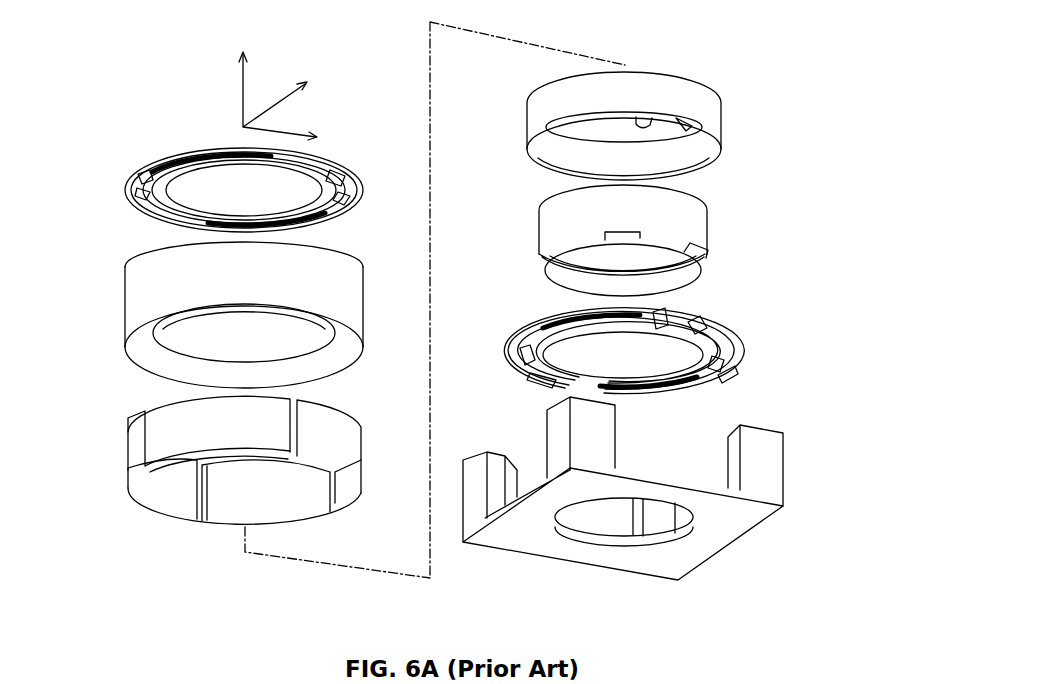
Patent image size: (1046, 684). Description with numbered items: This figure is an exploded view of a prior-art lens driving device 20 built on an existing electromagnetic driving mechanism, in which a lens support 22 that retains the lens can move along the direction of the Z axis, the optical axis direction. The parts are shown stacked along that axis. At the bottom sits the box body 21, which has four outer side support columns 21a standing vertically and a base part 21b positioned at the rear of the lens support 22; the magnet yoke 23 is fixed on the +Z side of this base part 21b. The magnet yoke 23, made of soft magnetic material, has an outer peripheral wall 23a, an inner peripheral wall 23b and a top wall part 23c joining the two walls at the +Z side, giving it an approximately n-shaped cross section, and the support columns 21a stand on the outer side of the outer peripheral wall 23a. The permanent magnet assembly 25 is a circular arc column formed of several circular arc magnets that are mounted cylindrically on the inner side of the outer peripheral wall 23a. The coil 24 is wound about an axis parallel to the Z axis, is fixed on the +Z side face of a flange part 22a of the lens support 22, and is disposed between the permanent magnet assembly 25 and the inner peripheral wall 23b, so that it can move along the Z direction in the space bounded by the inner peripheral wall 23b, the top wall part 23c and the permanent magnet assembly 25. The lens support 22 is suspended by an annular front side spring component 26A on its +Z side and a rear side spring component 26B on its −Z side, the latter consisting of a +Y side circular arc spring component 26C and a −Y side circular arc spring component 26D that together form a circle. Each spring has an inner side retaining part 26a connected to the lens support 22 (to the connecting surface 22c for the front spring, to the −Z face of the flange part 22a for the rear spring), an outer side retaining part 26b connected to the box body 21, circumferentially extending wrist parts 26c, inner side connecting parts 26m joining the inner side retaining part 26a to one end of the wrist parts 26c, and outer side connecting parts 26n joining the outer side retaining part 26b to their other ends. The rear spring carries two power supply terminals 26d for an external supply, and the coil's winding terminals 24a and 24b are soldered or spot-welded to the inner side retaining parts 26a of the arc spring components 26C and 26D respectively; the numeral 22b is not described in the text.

The lens driving device 20 is at (118, 61).
The box body 21 is at (653, 495).
The outer side support columns 21a is at (755, 447).
The base part 21b is at (682, 556).
The lens support 22 is at (620, 231).
The flange part 22a is at (528, 268).
The coil terminal tab 22b is at (715, 272).
The connecting surface 22c is at (680, 195).
The magnet yoke 23 is at (231, 330).
The outer peripheral wall 23a is at (140, 350).
The inner peripheral wall 23b is at (305, 333).
The top wall part 23c is at (155, 265).
The coil 24 is at (660, 92).
The winding terminal 24a is at (690, 133).
The winding terminal 24b is at (645, 120).
The permanent magnet assembly 25 is at (163, 440).
The front side spring component 26A is at (213, 148).
The rear side spring component 26B is at (667, 323).
The +Y side circular arc spring component 26C is at (705, 380).
The −Y side circular arc spring component 26D is at (535, 385).
The inner side retaining part 26a is at (340, 182).
The outer side retaining part 26b is at (160, 167).
The wrist parts 26c is at (137, 207).
The power supply terminals 26d is at (668, 322).
The inner side connecting parts 26m is at (327, 217).
The outer side connecting parts 26n is at (137, 192).